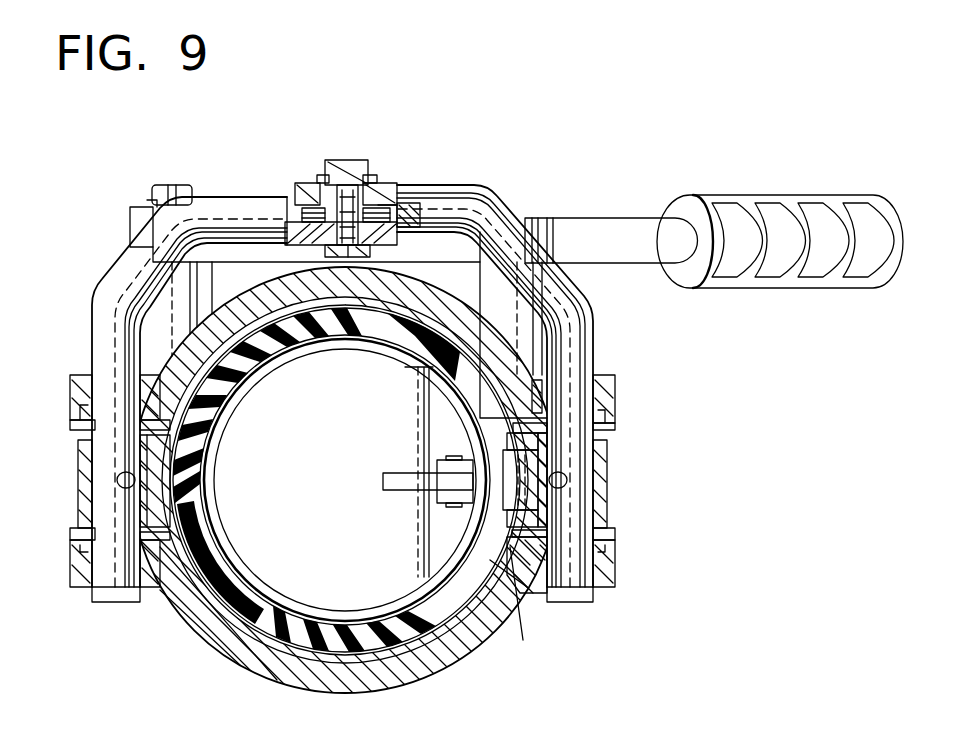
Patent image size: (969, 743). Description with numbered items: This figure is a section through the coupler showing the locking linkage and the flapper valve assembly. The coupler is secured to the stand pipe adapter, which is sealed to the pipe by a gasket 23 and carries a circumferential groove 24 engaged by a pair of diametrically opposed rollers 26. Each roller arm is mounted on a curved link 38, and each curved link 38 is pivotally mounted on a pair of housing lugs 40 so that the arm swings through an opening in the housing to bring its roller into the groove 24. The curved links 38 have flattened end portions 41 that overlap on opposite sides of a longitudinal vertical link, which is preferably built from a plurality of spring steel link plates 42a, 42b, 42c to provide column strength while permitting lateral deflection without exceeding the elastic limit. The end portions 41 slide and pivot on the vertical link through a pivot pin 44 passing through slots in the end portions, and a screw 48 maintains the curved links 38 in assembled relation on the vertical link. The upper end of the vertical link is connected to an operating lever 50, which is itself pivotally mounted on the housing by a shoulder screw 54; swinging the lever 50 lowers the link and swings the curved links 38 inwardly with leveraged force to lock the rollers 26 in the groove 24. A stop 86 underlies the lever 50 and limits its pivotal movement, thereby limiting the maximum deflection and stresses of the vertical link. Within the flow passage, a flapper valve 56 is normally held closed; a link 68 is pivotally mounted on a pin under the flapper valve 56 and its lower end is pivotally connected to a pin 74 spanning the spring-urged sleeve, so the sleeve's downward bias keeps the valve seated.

The gasket 23 is at (220, 422).
The circumferential groove 24 is at (512, 565).
The rollers 26 is at (178, 488).
The curved link 38 is at (92, 300).
The housing lugs 40 is at (70, 402).
The flattened end portions 41 is at (388, 183).
The link plate 42a is at (380, 206).
The link plate 42b is at (313, 196).
The link plate 42c is at (300, 216).
The pivot pin 44 is at (346, 162).
The screw 48 is at (338, 258).
The operating lever 50 is at (705, 195).
The shoulder screw 54 is at (170, 185).
The flapper valve 56 is at (428, 530).
The link 68 is at (383, 481).
The pin 74 is at (437, 505).
The stop 86 is at (558, 237).